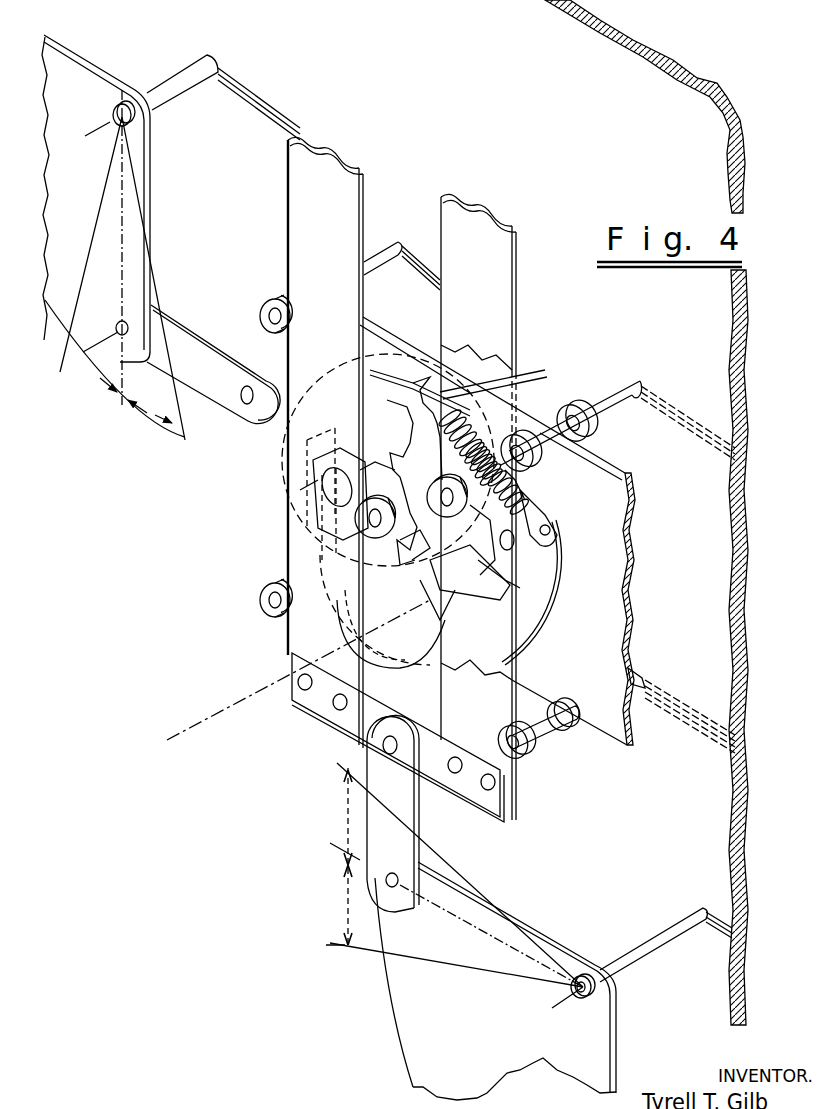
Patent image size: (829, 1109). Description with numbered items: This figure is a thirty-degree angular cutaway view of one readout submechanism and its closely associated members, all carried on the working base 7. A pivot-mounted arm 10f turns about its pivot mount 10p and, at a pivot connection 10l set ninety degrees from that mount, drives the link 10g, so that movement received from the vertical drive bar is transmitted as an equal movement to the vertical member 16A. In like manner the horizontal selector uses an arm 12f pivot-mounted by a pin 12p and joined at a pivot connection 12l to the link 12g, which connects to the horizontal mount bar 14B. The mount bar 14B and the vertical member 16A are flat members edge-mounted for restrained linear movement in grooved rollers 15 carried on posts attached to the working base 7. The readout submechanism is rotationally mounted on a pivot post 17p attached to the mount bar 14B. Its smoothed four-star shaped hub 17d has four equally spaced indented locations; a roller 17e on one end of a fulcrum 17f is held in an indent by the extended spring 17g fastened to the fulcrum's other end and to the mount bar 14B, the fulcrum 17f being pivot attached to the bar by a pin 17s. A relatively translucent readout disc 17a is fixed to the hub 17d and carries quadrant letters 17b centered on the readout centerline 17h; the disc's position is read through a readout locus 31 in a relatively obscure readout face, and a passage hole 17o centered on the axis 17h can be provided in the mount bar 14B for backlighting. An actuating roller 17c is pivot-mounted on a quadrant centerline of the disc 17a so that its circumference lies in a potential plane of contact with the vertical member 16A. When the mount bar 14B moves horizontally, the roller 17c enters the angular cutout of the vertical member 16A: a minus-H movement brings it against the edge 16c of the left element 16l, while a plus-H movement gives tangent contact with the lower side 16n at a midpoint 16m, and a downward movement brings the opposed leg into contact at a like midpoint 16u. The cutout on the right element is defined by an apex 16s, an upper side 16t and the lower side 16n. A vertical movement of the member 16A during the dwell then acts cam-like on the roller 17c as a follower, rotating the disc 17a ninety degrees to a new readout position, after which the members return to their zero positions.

The working base 7 is at (688, 572).
The upper flange plate 12f is at (92, 196).
The pin 12p is at (188, 88).
The hole in upper flange 12l is at (117, 327).
The link 12g is at (212, 378).
The grooved rollers 15 is at (258, 320).
The left element 16l is at (340, 216).
The lower side 16n is at (498, 279).
The horizontal mount bar 14B is at (598, 676).
The vertical member 16A is at (318, 716).
The link 10g is at (404, 786).
The pivot connection 10l is at (394, 890).
The pivot-mounted arm 10f is at (490, 1031).
The pivot mount 10p is at (640, 952).
The readout disc 17a is at (388, 365).
The extended spring 17g is at (514, 402).
The roller 17e is at (478, 440).
The fulcrum 17f is at (508, 466).
The pin 17s is at (530, 557).
The upper side 16t is at (504, 540).
The apex 16s is at (478, 572).
The passage hole 17o is at (540, 624).
The letters 17b is at (385, 422).
The actuating roller 17c is at (380, 490).
The midpoint 16u is at (338, 458).
The edge 16c is at (328, 470).
The midpoint 16m is at (362, 532).
The pivot post 17p is at (405, 530).
The four-star shaped hub 17d is at (432, 562).
The readout centerline 17h is at (192, 735).
The readout locus 31 is at (400, 672).